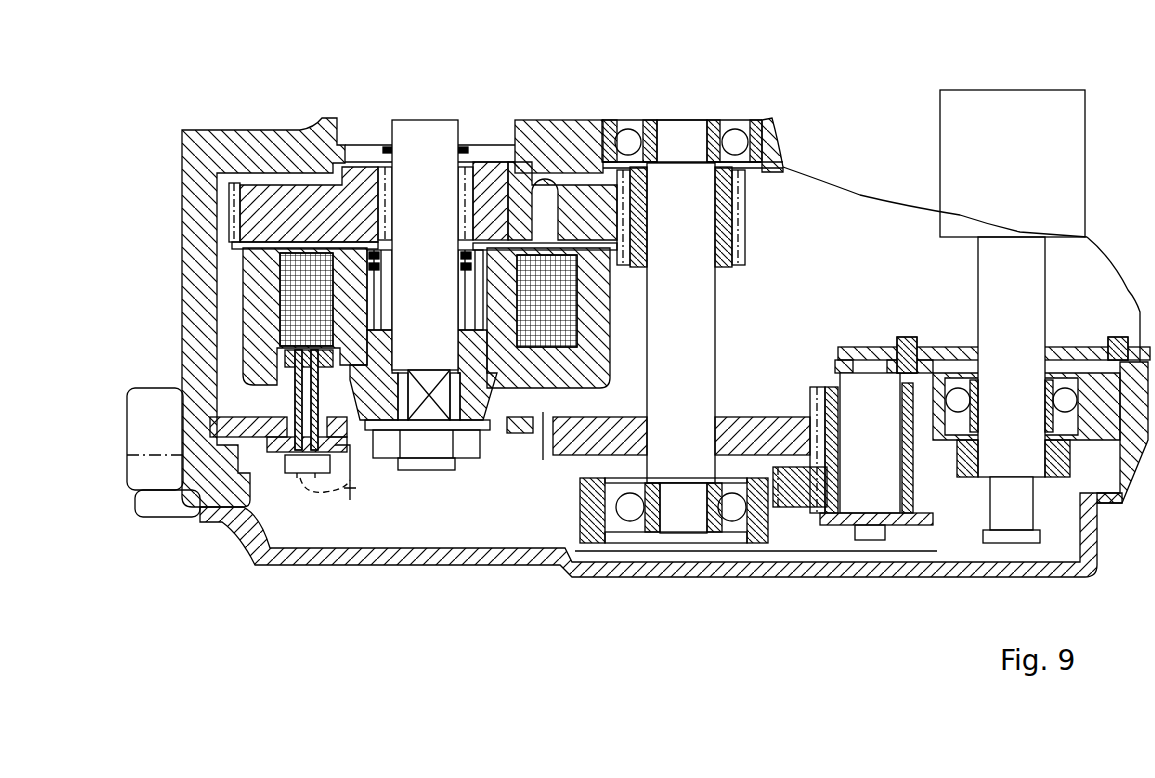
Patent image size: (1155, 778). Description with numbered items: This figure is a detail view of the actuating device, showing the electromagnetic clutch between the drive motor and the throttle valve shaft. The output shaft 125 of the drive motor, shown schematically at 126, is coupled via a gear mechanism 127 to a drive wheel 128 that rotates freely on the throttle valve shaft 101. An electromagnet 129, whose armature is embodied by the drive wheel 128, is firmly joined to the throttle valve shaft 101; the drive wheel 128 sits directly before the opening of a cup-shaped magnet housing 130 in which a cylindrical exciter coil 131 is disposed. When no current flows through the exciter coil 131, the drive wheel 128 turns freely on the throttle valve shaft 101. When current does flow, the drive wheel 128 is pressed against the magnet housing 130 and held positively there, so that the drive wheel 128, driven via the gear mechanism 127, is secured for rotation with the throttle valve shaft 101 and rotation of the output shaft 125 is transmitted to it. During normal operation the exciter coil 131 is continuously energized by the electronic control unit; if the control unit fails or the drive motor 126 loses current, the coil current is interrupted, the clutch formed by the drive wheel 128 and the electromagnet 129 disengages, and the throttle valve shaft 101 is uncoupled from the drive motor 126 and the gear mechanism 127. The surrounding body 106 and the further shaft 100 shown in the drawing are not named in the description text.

The output shaft 100 is at (664, 112).
The throttle valve shaft 101 is at (426, 212).
The housing 106 is at (203, 182).
The output shaft 125 is at (997, 293).
The drive motor 126 is at (1027, 183).
The gear mechanism 127 is at (786, 512).
The drive wheel 128 is at (357, 190).
The electromagnet 129 is at (236, 332).
The magnet housing 130 is at (253, 247).
The exciter coil 131 is at (300, 260).